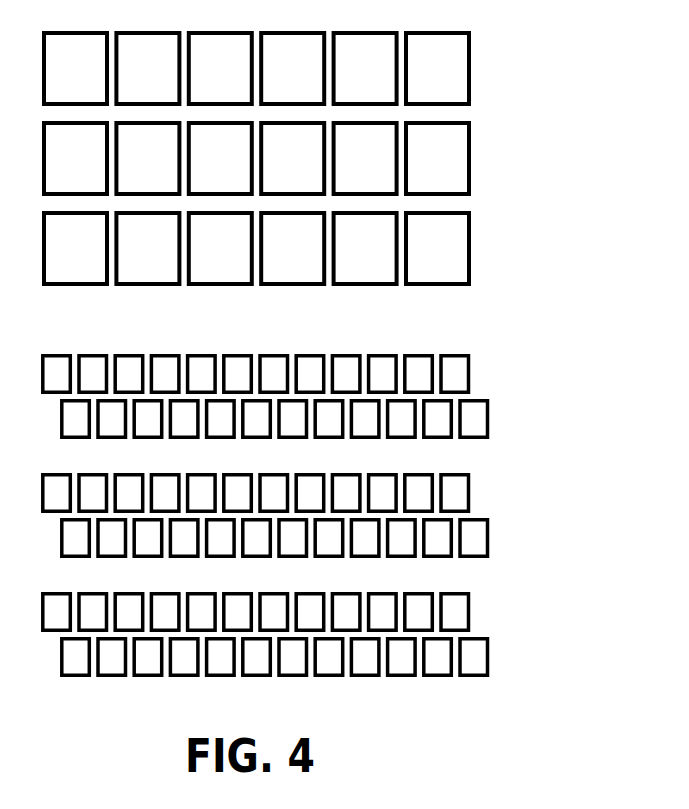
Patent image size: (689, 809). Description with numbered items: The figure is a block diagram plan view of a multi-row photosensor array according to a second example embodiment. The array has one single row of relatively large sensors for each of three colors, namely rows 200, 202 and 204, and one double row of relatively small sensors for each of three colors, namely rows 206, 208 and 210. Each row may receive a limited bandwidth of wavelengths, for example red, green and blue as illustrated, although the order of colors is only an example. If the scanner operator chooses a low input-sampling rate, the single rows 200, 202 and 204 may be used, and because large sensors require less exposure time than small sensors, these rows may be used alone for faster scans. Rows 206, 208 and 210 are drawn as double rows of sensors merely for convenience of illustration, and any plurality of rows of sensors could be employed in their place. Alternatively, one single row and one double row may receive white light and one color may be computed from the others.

The row of relatively large sensors 200 is at (471, 91).
The row of relatively large sensors 202 is at (471, 181).
The row of relatively large sensors 204 is at (471, 271).
The double row of relatively small sensors 206 is at (488, 405).
The double row of relatively small sensors 208 is at (488, 524).
The double row of relatively small sensors 210 is at (488, 643).